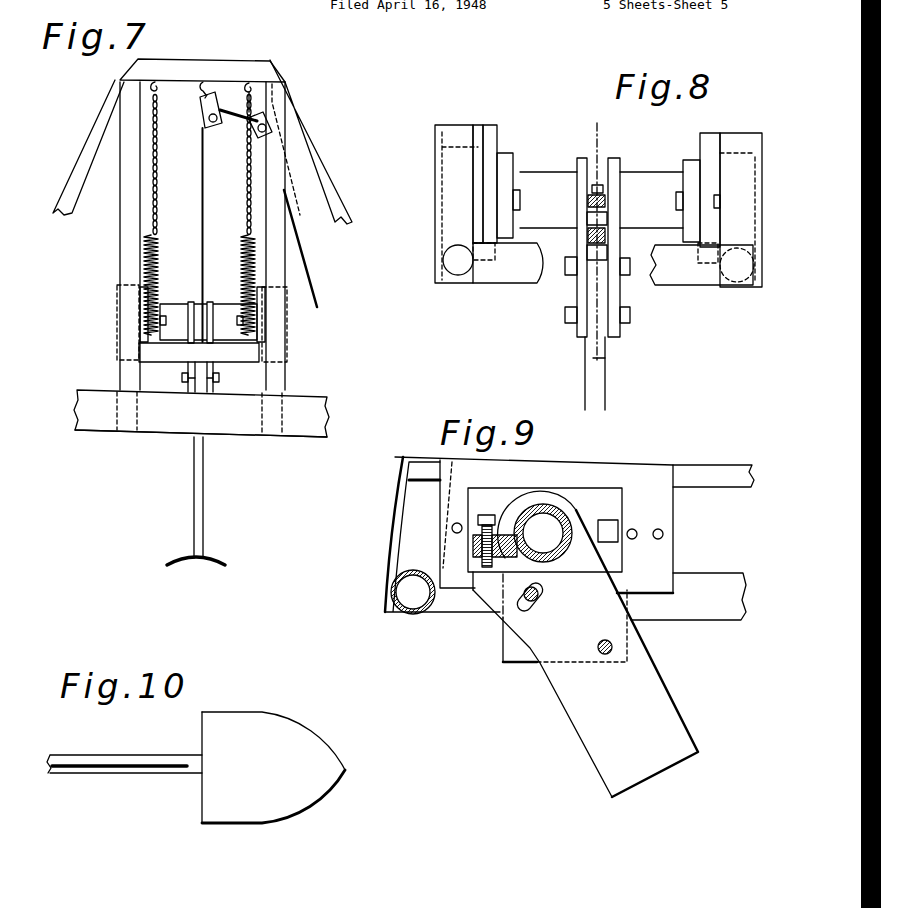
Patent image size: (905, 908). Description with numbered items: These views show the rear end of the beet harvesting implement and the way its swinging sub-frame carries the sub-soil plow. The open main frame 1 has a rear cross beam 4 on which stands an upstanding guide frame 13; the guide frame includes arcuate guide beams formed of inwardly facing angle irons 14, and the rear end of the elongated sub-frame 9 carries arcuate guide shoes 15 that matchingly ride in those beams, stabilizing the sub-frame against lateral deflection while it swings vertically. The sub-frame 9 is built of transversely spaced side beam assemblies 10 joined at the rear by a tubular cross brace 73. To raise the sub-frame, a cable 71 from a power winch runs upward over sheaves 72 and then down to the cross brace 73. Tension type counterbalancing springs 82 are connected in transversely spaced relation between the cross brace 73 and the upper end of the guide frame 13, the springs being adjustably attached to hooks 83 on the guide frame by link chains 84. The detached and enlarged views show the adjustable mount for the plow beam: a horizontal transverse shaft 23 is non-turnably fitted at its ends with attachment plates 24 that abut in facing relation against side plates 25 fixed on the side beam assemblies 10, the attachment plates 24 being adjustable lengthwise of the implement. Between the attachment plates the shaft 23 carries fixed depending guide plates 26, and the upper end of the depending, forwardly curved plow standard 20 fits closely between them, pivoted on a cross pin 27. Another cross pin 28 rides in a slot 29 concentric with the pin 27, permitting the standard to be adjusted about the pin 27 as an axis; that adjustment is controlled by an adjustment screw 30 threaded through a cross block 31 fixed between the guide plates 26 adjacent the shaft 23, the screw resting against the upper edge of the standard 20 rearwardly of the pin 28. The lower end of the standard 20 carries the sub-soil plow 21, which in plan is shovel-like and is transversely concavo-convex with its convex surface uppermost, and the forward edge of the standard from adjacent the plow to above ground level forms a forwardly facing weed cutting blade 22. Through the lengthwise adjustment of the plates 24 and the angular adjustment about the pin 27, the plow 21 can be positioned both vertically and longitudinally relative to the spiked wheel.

In FIG. 7, the main frame 1 is at (303, 397).
In FIG. 7, the rear cross beam 4 is at (150, 416).
In FIG. 8, the sub-frame 9 is at (630, 360).
In FIG. 8, the side beam assemblies 10 is at (737, 243).
In FIG. 9, the side beam assemblies 10 is at (725, 582).
In FIG. 7, the upstanding guide frame 13 is at (185, 71).
In FIG. 7, the angle irons 14 is at (120, 350).
In FIG. 7, the arcuate guide shoes 15 is at (140, 312).
In FIG. 8, the arcuate guide shoes 15 is at (452, 205).
In FIG. 9, the arcuate guide shoes 15 is at (387, 550).
In FIG. 7, the plow standard 20 is at (201, 493).
In FIG. 8, the plow standard 20 is at (588, 368).
In FIG. 9, the plow standard 20 is at (660, 727).
In FIG. 10, the plow standard 20 is at (117, 755).
In FIG. 7, the sub-soil plow 21 is at (205, 560).
In FIG. 10, the sub-soil plow 21 is at (283, 737).
In FIG. 10, the weed cutting blade 22 is at (90, 766).
In FIG. 7, the transverse shaft 23 is at (223, 312).
In FIG. 8, the transverse shaft 23 is at (648, 182).
In FIG. 9, the transverse shaft 23 is at (540, 507).
In FIG. 8, the attachment plates 24 is at (505, 167).
In FIG. 9, the attachment plates 24 is at (593, 503).
In FIG. 8, the side plates 25 is at (492, 137).
In FIG. 9, the side plates 25 is at (655, 475).
In FIG. 8, the guide plates 26 is at (612, 287).
In FIG. 9, the guide plates 26 is at (510, 653).
In FIG. 8, the cross pin 27 is at (630, 317).
In FIG. 9, the cross pin 27 is at (611, 647).
In FIG. 8, the cross pin 28 is at (628, 270).
In FIG. 9, the cross pin 28 is at (537, 605).
In FIG. 9, the slot 29 is at (542, 588).
In FIG. 8, the adjustment screw 30 is at (607, 222).
In FIG. 9, the adjustment screw 30 is at (485, 513).
In FIG. 8, the cross block 31 is at (590, 220).
In FIG. 9, the cross block 31 is at (473, 548).
In FIG. 7, the cable 71 is at (205, 206).
In FIG. 7, the sheaves 72 is at (254, 131).
In FIG. 7, the tubular cross brace 73 is at (171, 352).
In FIG. 8, the tubular cross brace 73 is at (510, 267).
In FIG. 9, the tubular cross brace 73 is at (413, 615).
In FIG. 7, the counterbalancing springs 82 is at (150, 260).
In FIG. 7, the hooks 83 is at (253, 83).
In FIG. 7, the link chains 84 is at (153, 198).